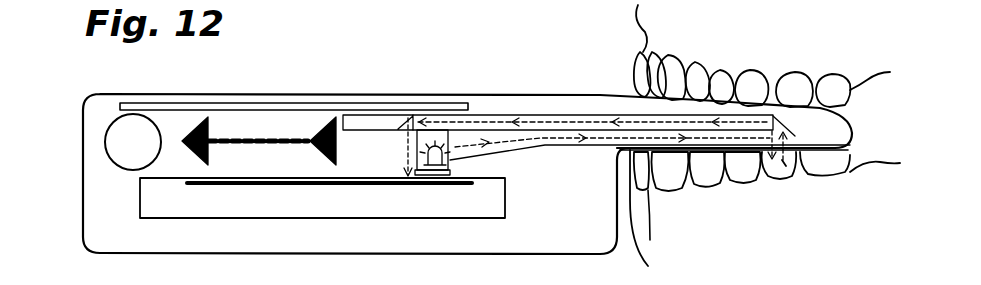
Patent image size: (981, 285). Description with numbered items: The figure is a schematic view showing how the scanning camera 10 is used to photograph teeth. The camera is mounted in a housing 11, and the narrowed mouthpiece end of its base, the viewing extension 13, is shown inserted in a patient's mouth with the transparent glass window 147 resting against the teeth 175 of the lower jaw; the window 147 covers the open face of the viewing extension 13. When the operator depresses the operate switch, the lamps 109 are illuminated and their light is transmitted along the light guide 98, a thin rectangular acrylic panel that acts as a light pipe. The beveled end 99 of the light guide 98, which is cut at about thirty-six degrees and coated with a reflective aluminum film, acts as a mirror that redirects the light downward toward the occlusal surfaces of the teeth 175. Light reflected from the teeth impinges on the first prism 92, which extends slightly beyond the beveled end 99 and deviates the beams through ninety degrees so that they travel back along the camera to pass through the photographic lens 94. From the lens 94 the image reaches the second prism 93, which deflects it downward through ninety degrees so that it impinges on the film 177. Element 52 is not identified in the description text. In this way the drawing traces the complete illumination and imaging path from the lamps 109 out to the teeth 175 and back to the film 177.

The scanning camera 10 is at (472, 175).
The housing 11 is at (82, 212).
The viewing extension 13 is at (830, 122).
The light guide 52 is at (536, 110).
The first prism 92 is at (778, 121).
The second prism 93 is at (409, 118).
The photographic lens 94 is at (596, 122).
The light guide 98 is at (550, 146).
The beveled end of light guide 99 is at (848, 141).
The lamps 109 is at (450, 165).
The transparent glass window 147 is at (659, 142).
The teeth 175 is at (850, 166).
The film 177 is at (355, 178).